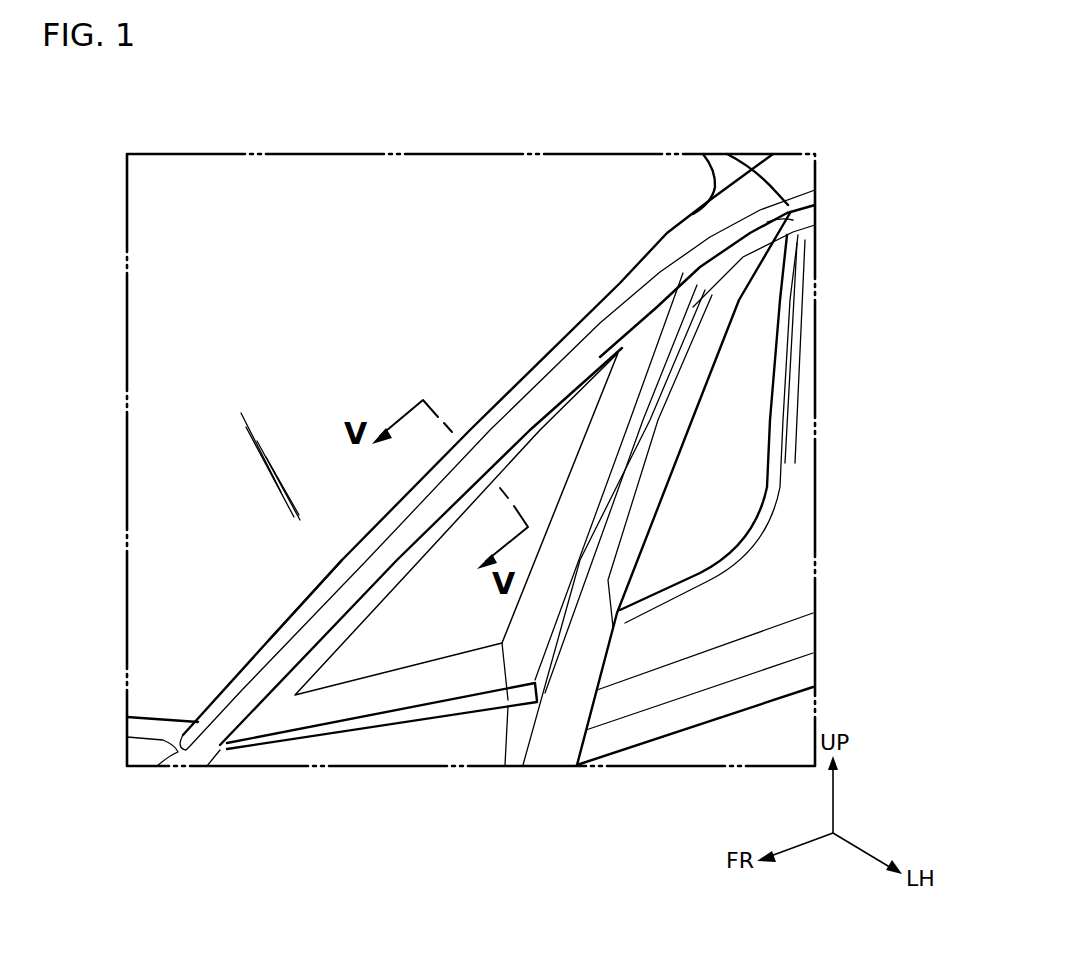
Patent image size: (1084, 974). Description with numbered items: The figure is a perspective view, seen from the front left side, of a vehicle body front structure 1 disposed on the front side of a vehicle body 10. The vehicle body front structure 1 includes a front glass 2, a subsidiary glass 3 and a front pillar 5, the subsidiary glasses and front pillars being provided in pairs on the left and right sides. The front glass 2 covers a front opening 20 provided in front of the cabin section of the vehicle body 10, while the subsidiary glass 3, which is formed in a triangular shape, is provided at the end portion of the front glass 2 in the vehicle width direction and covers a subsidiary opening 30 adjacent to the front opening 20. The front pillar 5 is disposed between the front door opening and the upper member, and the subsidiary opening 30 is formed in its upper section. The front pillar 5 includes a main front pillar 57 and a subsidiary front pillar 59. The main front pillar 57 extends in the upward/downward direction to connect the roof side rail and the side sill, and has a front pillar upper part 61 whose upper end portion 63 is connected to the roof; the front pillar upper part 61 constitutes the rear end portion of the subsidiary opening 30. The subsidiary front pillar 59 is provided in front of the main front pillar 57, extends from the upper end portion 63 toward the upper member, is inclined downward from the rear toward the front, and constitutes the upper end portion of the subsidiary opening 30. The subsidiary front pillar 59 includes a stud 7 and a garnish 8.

The vehicle body front structure 1 is at (828, 404).
The front glass 2 is at (307, 287).
The subsidiary glass 3 is at (535, 488).
The front pillar 5 is at (665, 218).
The stud 7 is at (320, 668).
The garnish 8 is at (523, 413).
The vehicle body 10 is at (850, 310).
The front opening 20 is at (587, 310).
The subsidiary opening 30 is at (357, 677).
The main front pillar 57 is at (672, 509).
The subsidiary front pillar 59 is at (262, 618).
The front pillar upper part 61 is at (677, 383).
The upper end portion 63 is at (767, 222).